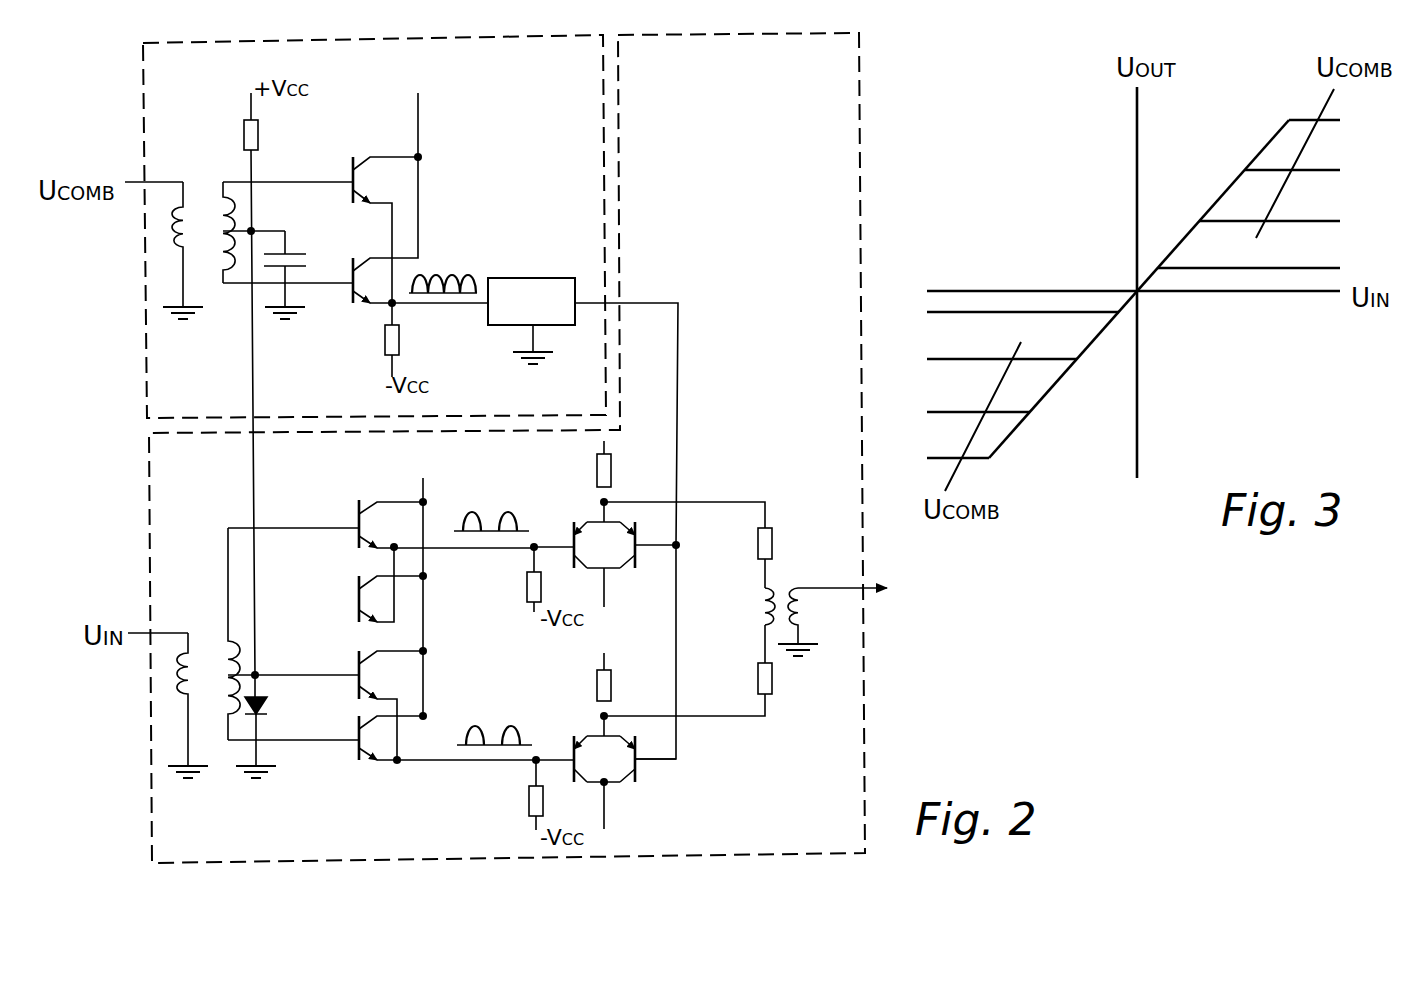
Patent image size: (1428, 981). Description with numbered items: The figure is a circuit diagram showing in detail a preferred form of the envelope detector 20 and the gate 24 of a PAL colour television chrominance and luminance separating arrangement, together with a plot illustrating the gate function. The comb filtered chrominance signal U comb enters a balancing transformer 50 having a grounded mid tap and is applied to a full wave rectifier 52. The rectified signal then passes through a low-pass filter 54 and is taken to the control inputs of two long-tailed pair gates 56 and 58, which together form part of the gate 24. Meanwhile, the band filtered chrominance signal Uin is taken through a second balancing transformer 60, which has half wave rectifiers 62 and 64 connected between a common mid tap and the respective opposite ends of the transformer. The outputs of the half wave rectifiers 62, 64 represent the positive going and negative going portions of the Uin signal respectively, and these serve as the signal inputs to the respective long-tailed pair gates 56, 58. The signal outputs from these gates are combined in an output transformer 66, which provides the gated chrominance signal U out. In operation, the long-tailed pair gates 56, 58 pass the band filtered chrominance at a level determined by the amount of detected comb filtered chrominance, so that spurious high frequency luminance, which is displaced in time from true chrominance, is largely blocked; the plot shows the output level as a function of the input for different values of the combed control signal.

The envelope detector 20 is at (143, 112).
The gate 24 is at (860, 132).
The balancing transformer 50 is at (200, 175).
The full wave rectifier 52 is at (428, 210).
The low-pass filter 54 is at (530, 278).
The long-tailed pair gate 56 is at (568, 525).
The long-tailed pair gate 58 is at (650, 776).
The balancing transformer 60 is at (222, 768).
The half wave rectifier 62 is at (358, 708).
The half wave rectifier 64 is at (355, 567).
The output transformer 66 is at (757, 607).